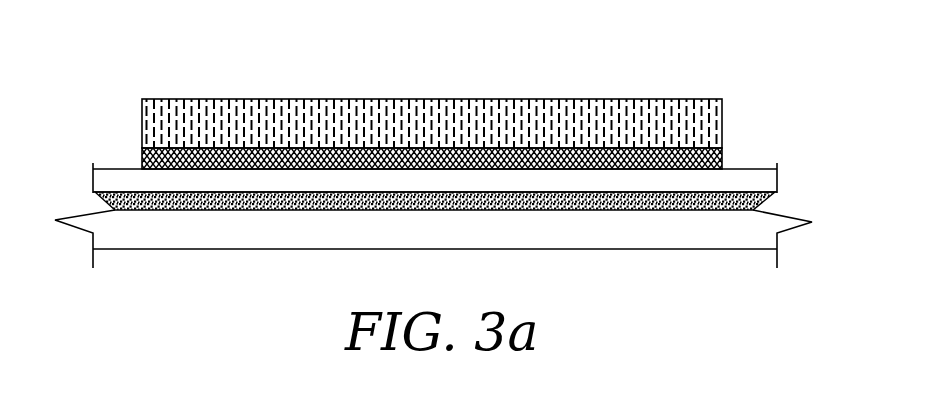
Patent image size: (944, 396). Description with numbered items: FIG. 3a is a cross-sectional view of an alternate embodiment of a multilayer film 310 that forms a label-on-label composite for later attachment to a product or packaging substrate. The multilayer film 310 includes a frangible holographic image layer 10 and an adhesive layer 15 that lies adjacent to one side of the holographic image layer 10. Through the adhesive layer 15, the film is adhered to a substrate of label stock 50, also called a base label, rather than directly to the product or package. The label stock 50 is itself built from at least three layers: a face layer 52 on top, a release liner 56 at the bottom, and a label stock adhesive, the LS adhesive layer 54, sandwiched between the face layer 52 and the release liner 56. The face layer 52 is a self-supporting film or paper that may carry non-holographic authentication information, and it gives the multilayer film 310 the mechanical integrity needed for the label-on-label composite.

The multilayer film 310 is at (116, 94).
The frangible holographic image layer 10 is at (722, 122).
The adhesive layer 15 is at (722, 155).
The label stock 50 is at (76, 192).
The face layer 52 is at (763, 179).
The LS adhesive layer 54 is at (752, 200).
The release liner 56 is at (763, 237).